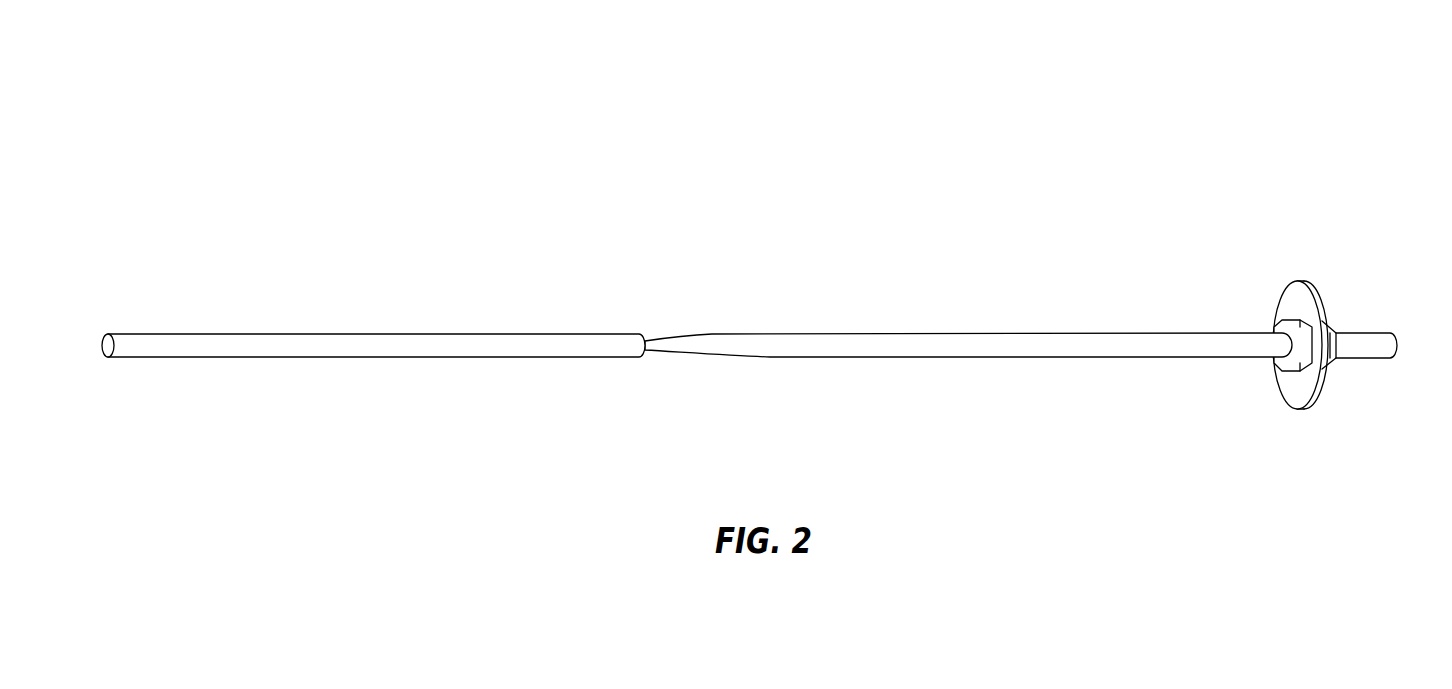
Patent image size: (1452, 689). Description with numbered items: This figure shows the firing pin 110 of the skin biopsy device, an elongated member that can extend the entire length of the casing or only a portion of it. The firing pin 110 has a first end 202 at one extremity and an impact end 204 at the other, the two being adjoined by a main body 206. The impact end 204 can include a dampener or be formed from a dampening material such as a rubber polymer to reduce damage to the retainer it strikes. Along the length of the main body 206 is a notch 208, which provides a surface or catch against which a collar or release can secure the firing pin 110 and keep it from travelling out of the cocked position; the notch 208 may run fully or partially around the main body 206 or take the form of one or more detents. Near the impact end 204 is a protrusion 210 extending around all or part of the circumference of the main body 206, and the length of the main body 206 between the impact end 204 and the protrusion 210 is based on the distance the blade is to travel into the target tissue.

The firing pin 110 is at (843, 128).
The first end 202 is at (104, 317).
The impact end 204 is at (1397, 292).
The main body 206 is at (393, 340).
The notch 208 is at (647, 325).
The protrusion 210 is at (1296, 281).